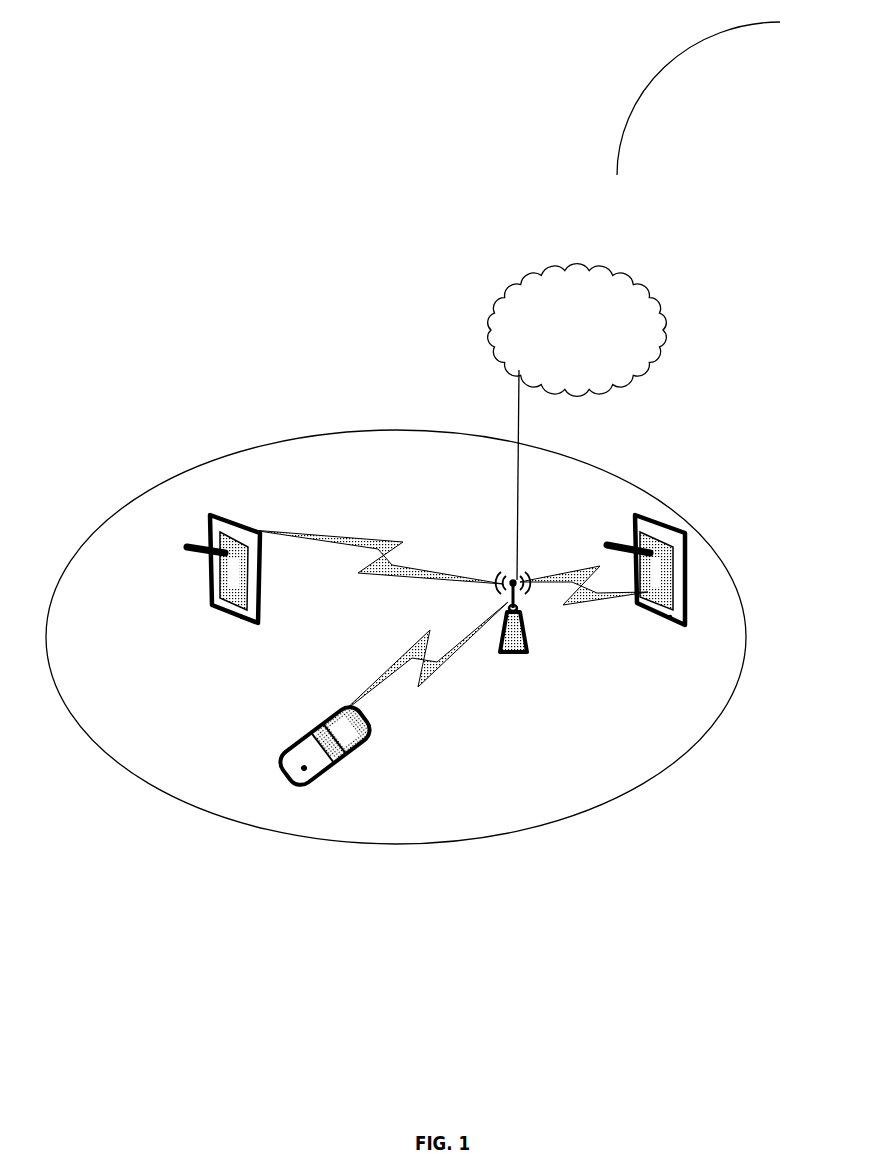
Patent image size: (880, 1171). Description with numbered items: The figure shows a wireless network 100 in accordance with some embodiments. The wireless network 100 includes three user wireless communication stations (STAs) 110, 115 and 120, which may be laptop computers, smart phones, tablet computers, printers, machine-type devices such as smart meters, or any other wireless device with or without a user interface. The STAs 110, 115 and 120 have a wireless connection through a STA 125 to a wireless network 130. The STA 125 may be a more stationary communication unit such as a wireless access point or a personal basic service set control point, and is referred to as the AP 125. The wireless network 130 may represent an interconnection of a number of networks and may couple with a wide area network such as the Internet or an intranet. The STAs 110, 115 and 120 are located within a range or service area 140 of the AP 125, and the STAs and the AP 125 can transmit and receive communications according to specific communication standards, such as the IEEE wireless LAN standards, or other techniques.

The wireless network 100 is at (729, 98).
The user wireless communication station 110 is at (312, 745).
The user wireless communication station 115 is at (673, 532).
The user wireless communication station 120 is at (188, 540).
The access point 125 is at (503, 586).
The wireless network 130 is at (613, 268).
The service area 140 is at (281, 441).